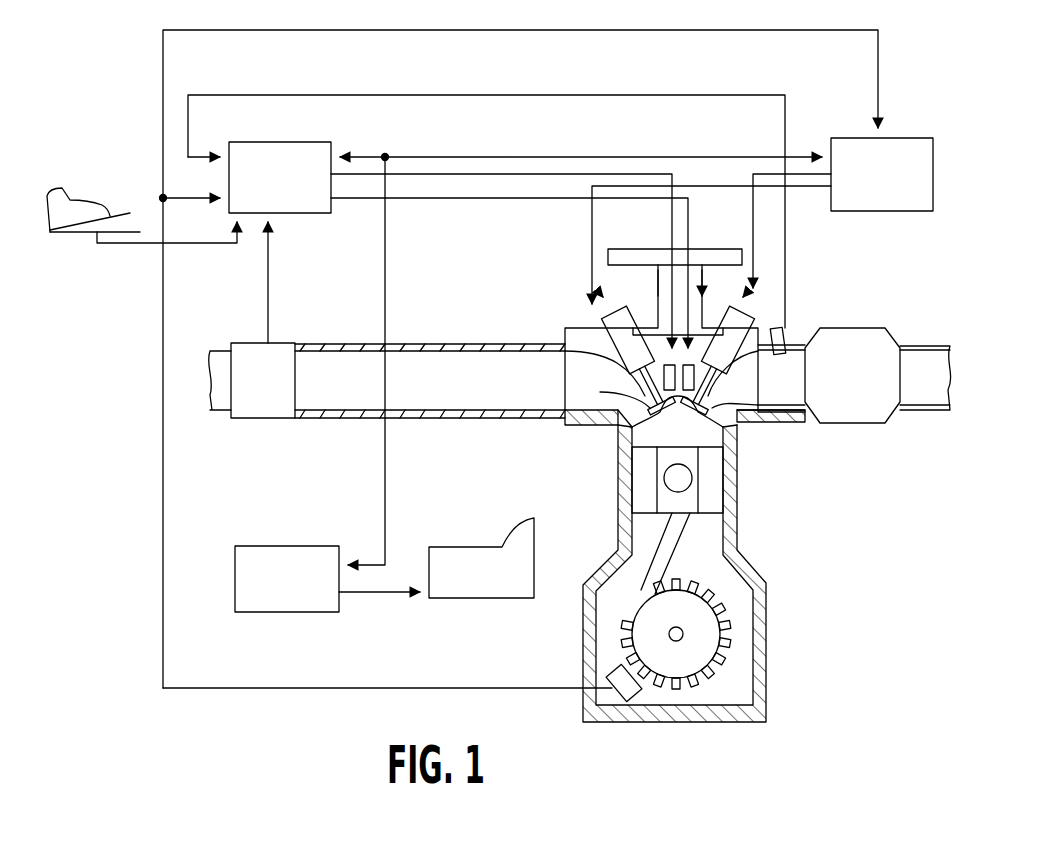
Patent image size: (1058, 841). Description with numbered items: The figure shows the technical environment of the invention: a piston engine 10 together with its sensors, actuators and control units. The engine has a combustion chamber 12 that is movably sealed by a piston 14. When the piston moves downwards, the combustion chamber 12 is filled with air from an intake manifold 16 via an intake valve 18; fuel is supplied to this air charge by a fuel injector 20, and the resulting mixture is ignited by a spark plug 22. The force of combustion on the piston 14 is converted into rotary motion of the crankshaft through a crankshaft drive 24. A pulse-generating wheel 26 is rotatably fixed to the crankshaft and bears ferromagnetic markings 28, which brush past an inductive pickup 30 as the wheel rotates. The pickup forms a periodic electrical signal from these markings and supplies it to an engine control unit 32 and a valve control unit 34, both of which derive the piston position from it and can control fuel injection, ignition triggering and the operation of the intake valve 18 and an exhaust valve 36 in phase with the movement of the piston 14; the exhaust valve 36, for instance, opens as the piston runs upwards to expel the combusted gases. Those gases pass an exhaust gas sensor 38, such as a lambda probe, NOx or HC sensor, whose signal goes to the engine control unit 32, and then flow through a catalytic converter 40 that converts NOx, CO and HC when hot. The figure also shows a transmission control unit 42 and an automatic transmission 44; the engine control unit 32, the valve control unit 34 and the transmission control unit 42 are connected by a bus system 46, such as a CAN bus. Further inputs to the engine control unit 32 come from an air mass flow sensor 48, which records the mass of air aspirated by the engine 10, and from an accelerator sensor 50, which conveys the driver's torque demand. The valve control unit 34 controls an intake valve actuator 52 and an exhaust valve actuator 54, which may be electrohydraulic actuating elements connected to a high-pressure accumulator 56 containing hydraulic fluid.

The piston engine 10 is at (824, 592).
The combustion chamber 12 is at (630, 490).
The piston 14 is at (720, 490).
The intake manifold 16 is at (445, 343).
The intake valve 18 is at (605, 392).
The fuel injector 20 is at (715, 430).
The spark plug 22 is at (625, 432).
The crankshaft drive 24 is at (668, 548).
The pulse-generating wheel 26 is at (700, 640).
The ferromagnetic markings 28 is at (700, 682).
The inductive pickup 30 is at (630, 700).
The engine control unit 32 is at (262, 141).
The valve control unit 34 is at (852, 137).
The exhaust valve 36 is at (760, 393).
The exhaust gas sensor 38 is at (786, 335).
The catalytic converter 40 is at (875, 424).
The transmission control unit 42 is at (280, 613).
The automatic transmission 44 is at (462, 599).
The bus system 46 is at (385, 462).
The air mass flow sensor 48 is at (283, 342).
The accelerator sensor 50 is at (97, 247).
The intake valve actuator 52 is at (588, 330).
The exhaust valve actuator 54 is at (765, 365).
The high-pressure accumulator 56 is at (620, 248).